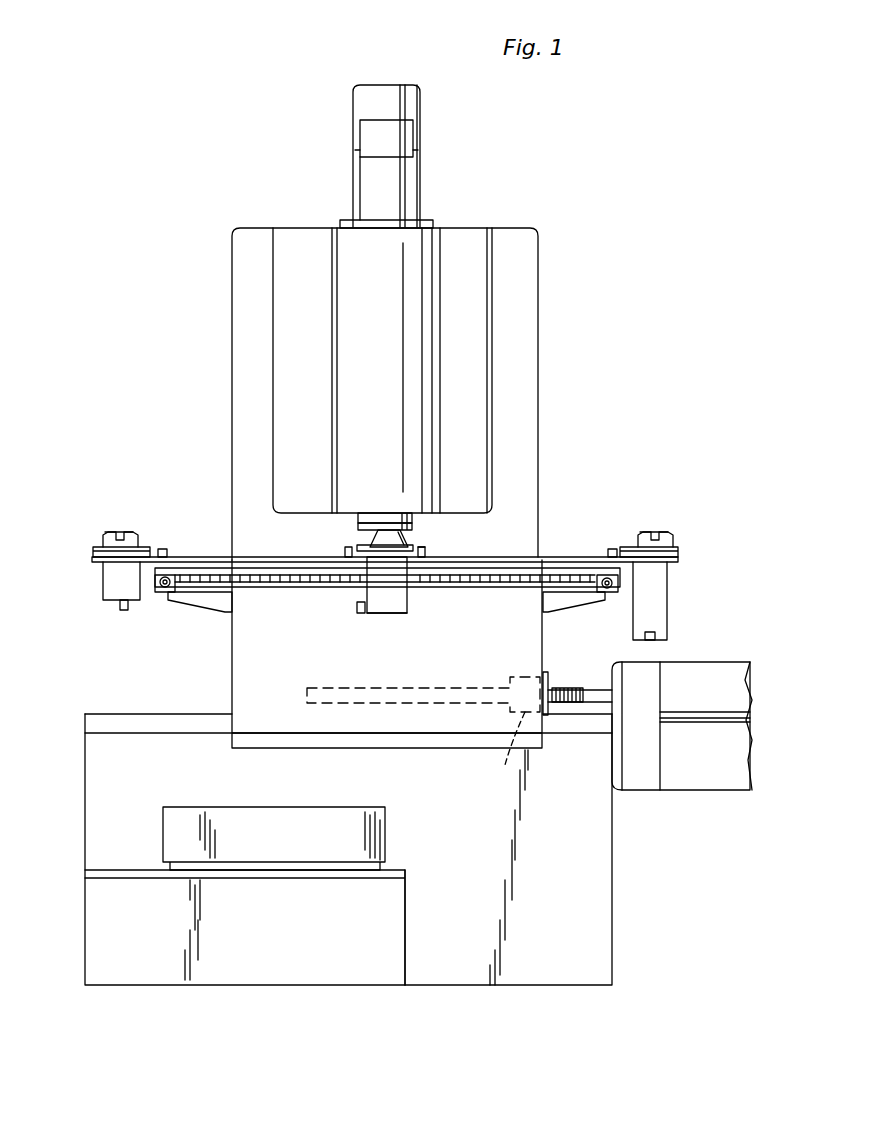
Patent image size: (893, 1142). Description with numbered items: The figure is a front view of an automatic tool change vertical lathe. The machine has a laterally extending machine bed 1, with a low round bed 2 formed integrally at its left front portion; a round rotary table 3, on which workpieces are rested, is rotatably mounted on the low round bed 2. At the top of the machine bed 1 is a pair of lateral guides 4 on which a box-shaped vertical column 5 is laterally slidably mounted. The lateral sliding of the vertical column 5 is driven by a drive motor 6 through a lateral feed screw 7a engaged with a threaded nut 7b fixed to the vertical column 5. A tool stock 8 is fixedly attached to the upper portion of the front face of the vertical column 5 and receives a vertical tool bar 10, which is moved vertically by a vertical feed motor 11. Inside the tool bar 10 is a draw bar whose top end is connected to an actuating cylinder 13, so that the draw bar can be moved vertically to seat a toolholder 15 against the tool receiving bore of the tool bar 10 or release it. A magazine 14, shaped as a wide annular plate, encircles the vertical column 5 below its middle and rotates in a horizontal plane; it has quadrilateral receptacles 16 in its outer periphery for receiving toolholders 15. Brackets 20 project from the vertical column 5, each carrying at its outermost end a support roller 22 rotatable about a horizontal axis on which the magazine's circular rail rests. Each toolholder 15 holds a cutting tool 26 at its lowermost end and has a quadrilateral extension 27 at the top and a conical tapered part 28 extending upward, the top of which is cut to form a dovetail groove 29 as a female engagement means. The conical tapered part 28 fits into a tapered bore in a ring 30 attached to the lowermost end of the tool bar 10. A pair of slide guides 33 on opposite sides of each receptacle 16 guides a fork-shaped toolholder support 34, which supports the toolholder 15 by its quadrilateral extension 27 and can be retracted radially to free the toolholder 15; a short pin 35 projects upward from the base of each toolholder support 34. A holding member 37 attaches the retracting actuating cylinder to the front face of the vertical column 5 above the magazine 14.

The machine bed 1 is at (85, 786).
The low round bed 2 is at (113, 985).
The round rotary table 3 is at (288, 807).
The lateral guides 4 is at (170, 716).
The vertical column 5 is at (232, 372).
The drive motor 6 is at (708, 740).
The lateral feed screw 7a is at (437, 688).
The threaded nut 7b is at (508, 760).
The tool stock 8 is at (332, 305).
The vertical tool bar 10 is at (368, 185).
The vertical feed motor 11 is at (420, 100).
The actuating cylinder 13 is at (368, 138).
The magazine 14 is at (566, 575).
The toolholder 15 is at (108, 592).
The quadrilateral receptacles 16 is at (362, 565).
The brackets 20 is at (212, 602).
The support roller 22 is at (165, 592).
The cutting tool 26 is at (124, 612).
The quadrilateral extension 27 is at (418, 545).
The conical tapered part 28 is at (378, 540).
The dovetail groove 29 is at (118, 535).
The ring 30 is at (355, 523).
The slide guides 33 is at (345, 553).
The toolholder support 34 is at (168, 560).
The short pin 35 is at (160, 550).
The holding member 37 is at (425, 553).